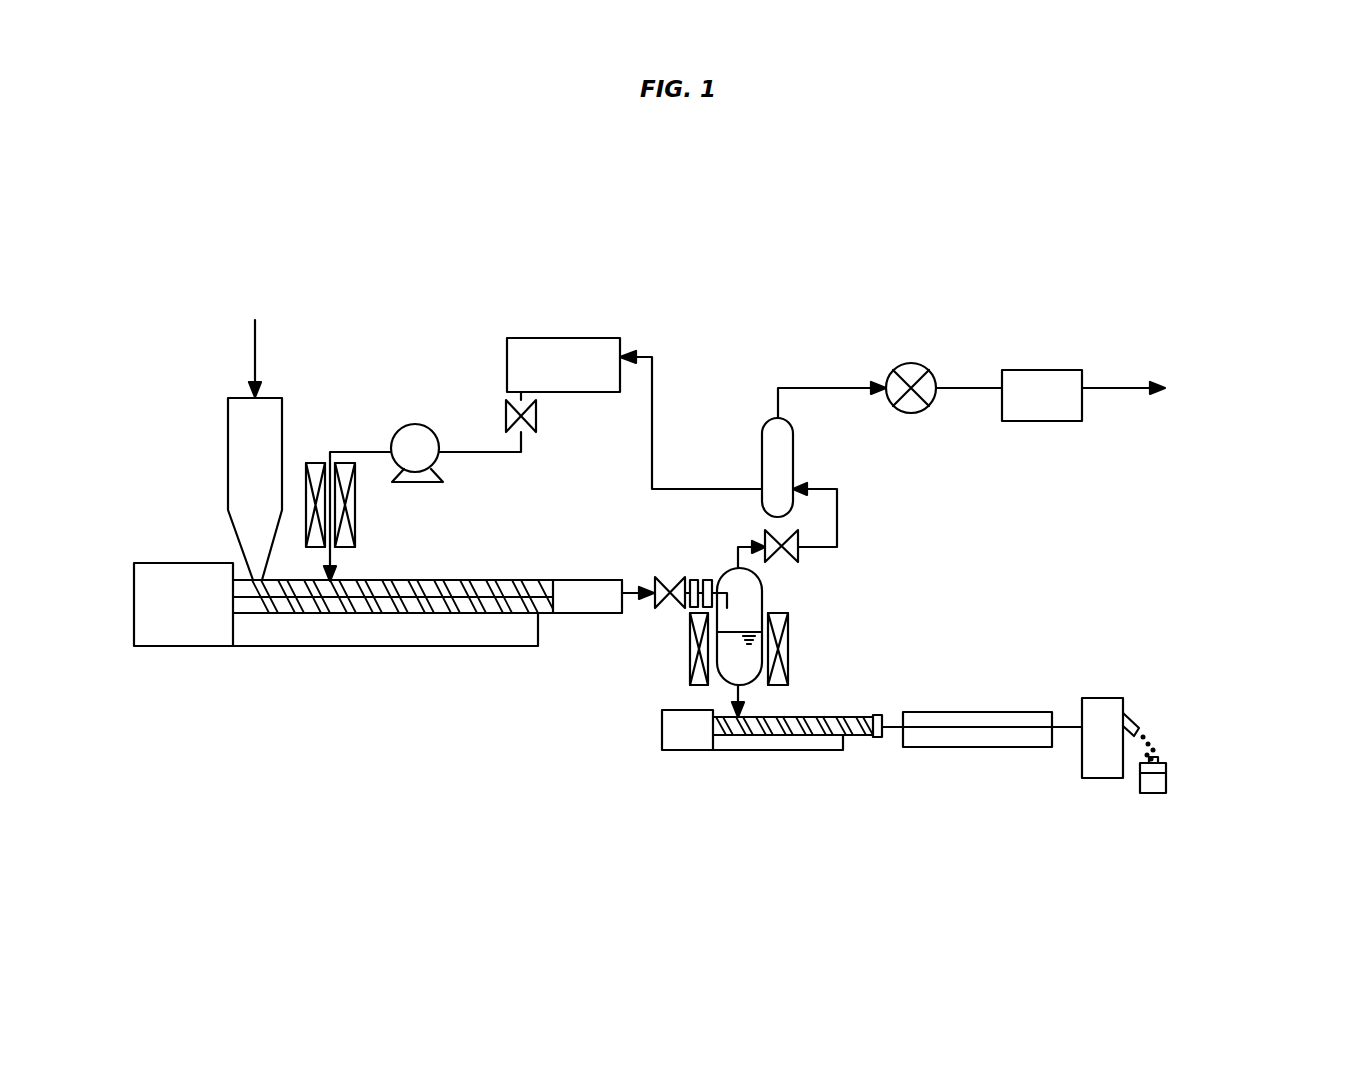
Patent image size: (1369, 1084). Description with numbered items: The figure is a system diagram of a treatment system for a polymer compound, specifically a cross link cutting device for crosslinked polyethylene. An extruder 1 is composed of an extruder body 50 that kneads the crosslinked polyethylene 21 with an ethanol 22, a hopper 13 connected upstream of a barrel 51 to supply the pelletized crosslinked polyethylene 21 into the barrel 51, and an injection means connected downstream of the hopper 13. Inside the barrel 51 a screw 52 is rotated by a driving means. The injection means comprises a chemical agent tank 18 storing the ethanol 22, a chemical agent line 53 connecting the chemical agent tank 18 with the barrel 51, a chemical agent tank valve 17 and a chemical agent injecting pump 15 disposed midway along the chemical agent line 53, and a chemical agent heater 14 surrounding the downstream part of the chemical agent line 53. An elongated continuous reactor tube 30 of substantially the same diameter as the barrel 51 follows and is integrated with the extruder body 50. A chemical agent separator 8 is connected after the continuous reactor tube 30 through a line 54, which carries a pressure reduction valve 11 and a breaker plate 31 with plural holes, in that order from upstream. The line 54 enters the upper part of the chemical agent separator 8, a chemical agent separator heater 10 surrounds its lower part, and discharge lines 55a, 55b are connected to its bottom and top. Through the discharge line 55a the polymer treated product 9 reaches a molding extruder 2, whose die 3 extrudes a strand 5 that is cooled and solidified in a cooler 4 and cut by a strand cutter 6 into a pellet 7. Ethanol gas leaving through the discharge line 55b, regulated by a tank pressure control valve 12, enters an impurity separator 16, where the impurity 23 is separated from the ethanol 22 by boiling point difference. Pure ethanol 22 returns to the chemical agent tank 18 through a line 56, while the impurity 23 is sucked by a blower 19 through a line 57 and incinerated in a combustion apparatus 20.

The extruder 1 is at (346, 682).
The molding extruder 2 is at (818, 748).
The die 3 is at (875, 740).
The cooler 4 is at (990, 748).
The strand 5 is at (1061, 742).
The strand cutter 6 is at (1108, 717).
The pellet 7 is at (1168, 735).
The chemical agent separator 8 is at (762, 600).
The polymer treated product 9 is at (688, 668).
The chemical agent separator heater 10 is at (788, 645).
The pressure reduction valve 11 is at (653, 578).
The tank pressure control valve 12 is at (798, 557).
The hopper 13 is at (246, 446).
The chemical agent heater 14 is at (316, 462).
The chemical agent injecting pump 15 is at (416, 424).
The impurity separator 16 is at (793, 443).
The chemical agent tank valve 17 is at (507, 416).
The chemical agent tank 18 is at (600, 338).
The blower 19 is at (925, 405).
The combustion apparatus 20 is at (1025, 370).
The crosslinked polyethylene 21 is at (253, 347).
The ethanol 22 is at (335, 558).
The impurity 23 is at (850, 386).
The continuous reactor tube 30 is at (580, 598).
The breaker plate 31 is at (698, 578).
The extruder body 50 is at (310, 632).
The barrel 51 is at (400, 600).
The screw 52 is at (500, 615).
The chemical agent line 53 is at (378, 443).
The line 54 is at (634, 606).
The discharge line 55a is at (752, 691).
The discharge line 55b is at (724, 560).
The line 56 is at (655, 403).
The line 57 is at (794, 378).